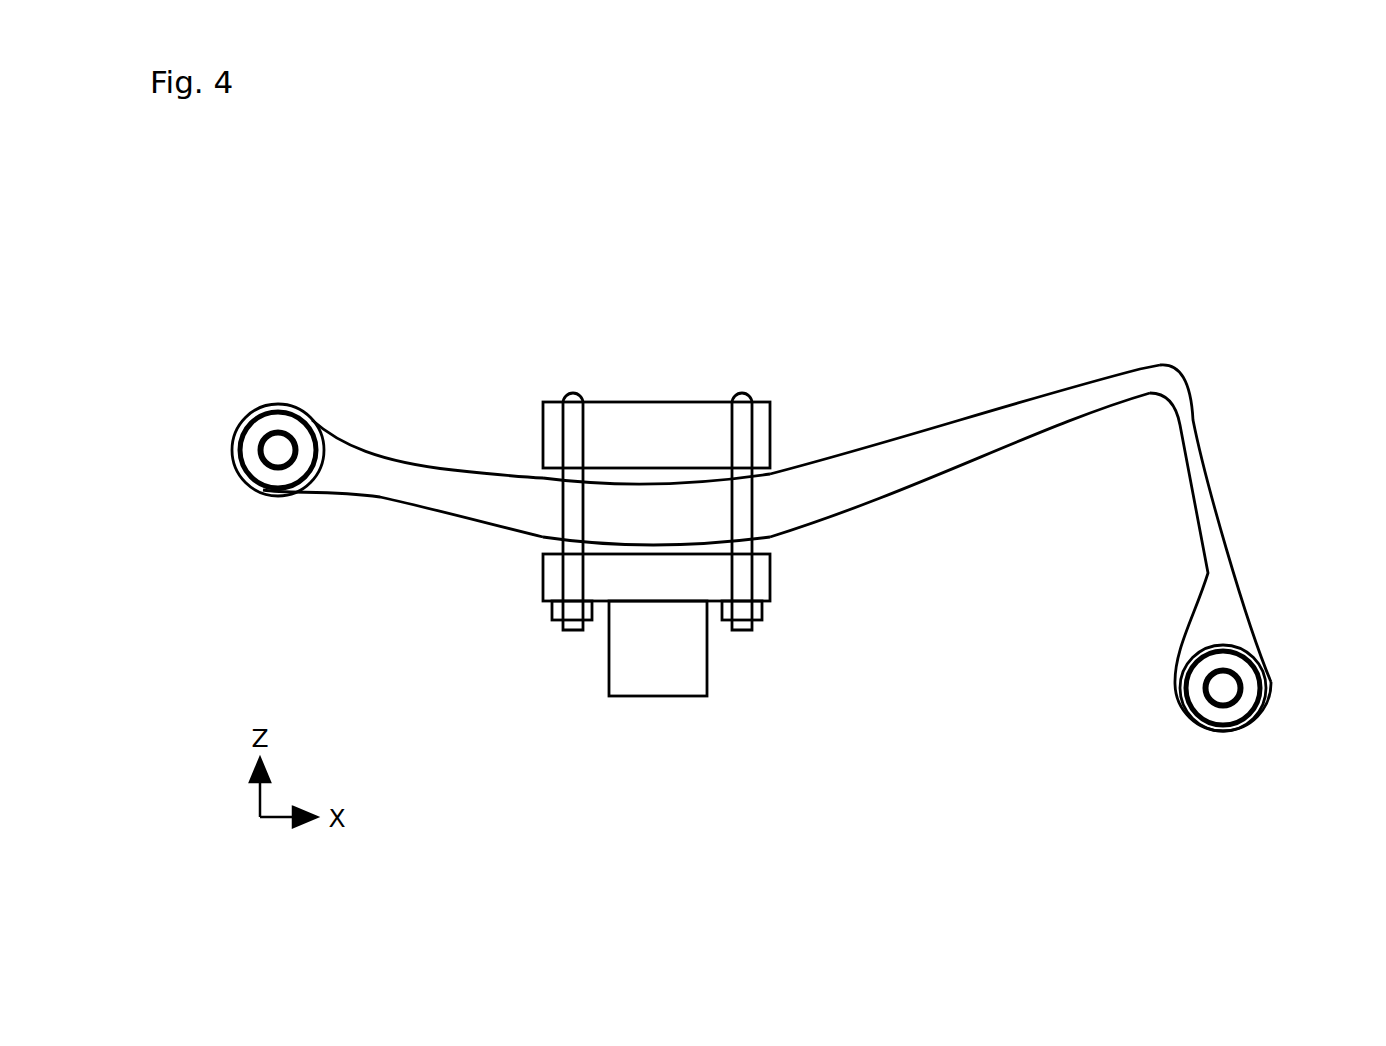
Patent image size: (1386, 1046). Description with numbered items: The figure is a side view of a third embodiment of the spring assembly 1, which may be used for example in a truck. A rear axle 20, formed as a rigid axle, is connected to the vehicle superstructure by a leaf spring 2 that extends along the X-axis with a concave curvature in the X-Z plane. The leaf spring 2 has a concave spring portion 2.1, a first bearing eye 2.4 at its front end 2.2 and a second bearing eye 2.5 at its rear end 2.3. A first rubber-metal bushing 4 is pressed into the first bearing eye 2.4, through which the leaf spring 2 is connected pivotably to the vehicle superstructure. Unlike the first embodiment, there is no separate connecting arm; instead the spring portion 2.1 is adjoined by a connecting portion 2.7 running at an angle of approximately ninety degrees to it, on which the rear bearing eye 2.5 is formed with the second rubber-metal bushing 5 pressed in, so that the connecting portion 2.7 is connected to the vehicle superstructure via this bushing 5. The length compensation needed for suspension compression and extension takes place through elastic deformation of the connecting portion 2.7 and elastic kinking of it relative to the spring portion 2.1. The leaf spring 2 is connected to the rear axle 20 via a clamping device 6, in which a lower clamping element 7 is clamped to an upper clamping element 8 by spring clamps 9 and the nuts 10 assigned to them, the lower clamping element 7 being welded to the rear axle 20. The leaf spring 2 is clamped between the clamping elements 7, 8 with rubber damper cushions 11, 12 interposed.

The spring assembly 1 is at (717, 280).
The leaf spring 2 is at (875, 490).
The spring portion 2.1 is at (860, 412).
The front end 2.2 is at (225, 405).
The rear end 2.3 is at (1218, 748).
The first bearing eye 2.4 is at (258, 490).
The second bearing eye 2.5 is at (1185, 705).
The connecting portion 2.7 is at (1237, 443).
The first rubber-metal bushing 4 is at (307, 420).
The second rubber-metal bushing 5 is at (1190, 672).
The clamping device 6 is at (700, 755).
The lower clamping element 7 is at (702, 585).
The upper clamping element 8 is at (650, 417).
The spring clamps 9 is at (565, 397).
The nuts 10 is at (560, 615).
The damper cushion 11 is at (547, 545).
The damper cushion 12 is at (660, 478).
The rear axle 20 is at (620, 677).